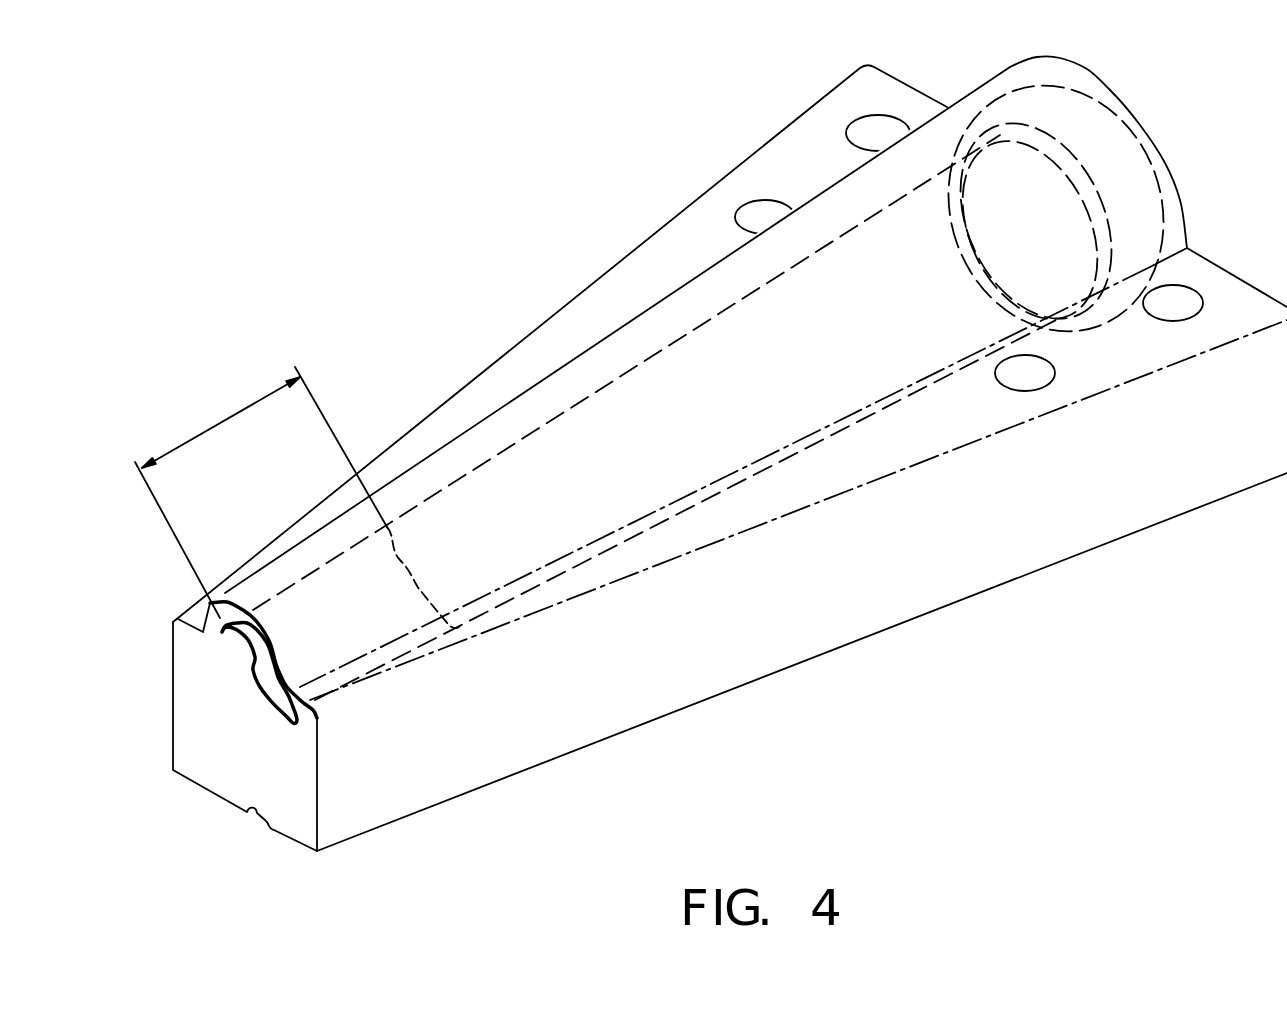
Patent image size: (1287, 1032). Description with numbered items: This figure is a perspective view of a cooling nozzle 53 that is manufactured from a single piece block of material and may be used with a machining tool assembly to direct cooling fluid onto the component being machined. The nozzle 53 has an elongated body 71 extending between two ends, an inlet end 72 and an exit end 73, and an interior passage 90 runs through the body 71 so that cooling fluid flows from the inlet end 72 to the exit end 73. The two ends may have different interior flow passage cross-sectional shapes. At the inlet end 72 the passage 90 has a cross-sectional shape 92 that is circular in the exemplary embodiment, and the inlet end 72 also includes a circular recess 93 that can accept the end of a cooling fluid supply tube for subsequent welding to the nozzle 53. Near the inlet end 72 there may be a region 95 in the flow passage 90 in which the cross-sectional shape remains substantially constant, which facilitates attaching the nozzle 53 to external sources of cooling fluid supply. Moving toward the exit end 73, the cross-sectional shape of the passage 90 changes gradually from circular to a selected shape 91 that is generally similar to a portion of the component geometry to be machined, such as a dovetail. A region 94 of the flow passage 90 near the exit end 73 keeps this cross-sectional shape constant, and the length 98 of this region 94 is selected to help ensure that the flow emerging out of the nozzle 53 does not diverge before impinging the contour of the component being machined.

The nozzle 53 is at (333, 232).
The body 71 is at (803, 612).
The inlet end 72 is at (1177, 193).
The exit end 73 is at (237, 755).
The interior passage 90 is at (623, 372).
The cross-sectional shape 91 is at (247, 638).
The cross-sectional shape 92 is at (977, 274).
The circular recess 93 is at (1113, 93).
The region 94 is at (283, 590).
The region 95 is at (968, 226).
The length 98 is at (230, 418).